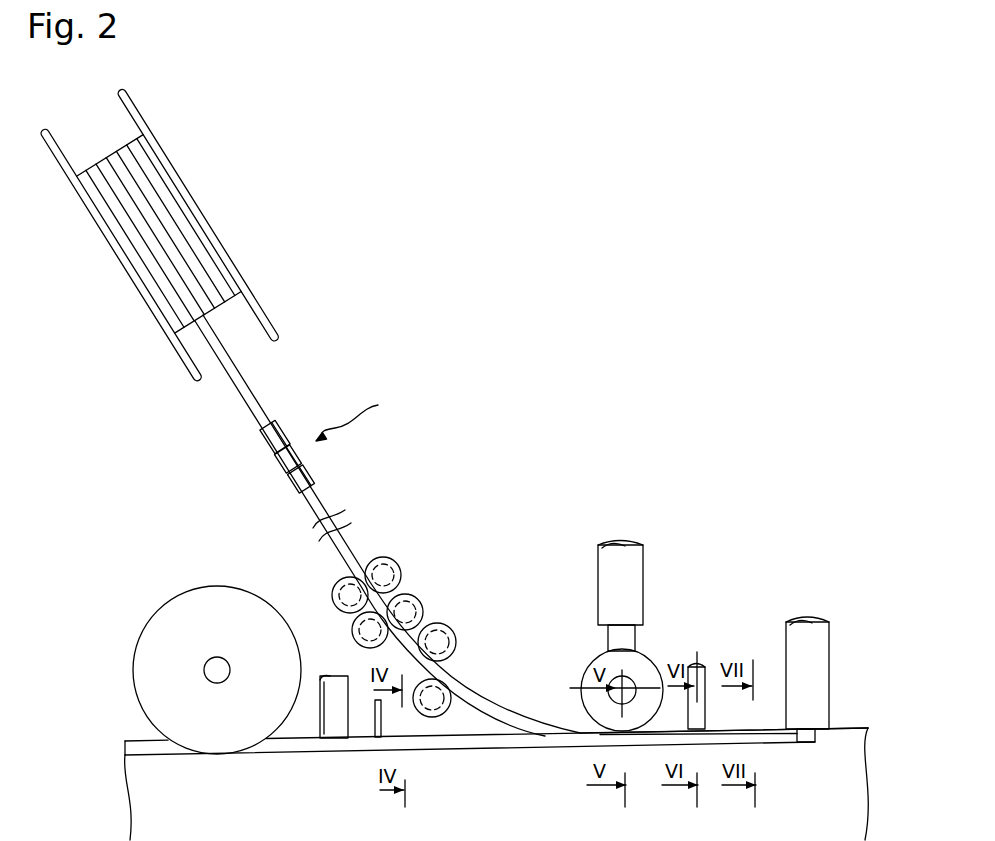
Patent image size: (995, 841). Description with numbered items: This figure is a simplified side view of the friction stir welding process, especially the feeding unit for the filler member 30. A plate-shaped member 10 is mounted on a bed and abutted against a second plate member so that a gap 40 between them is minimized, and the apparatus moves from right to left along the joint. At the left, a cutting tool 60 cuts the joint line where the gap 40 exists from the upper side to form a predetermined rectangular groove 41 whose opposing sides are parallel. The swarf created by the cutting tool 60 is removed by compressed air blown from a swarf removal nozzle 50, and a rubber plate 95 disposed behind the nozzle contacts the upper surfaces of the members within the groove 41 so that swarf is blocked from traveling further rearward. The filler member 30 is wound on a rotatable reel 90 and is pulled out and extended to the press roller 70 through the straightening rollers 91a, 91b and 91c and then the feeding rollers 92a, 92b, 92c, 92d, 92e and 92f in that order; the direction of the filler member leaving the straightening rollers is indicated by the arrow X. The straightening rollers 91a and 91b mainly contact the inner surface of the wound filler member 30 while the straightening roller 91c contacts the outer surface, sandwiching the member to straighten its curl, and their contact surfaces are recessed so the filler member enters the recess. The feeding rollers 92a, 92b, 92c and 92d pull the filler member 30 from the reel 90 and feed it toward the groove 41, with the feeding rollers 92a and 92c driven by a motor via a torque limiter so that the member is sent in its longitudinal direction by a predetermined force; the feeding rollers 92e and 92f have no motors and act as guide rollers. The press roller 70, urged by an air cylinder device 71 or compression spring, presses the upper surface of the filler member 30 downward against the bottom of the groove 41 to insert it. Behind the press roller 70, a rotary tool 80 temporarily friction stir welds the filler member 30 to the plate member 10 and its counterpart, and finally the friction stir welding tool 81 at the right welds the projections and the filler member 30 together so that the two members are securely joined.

The plate-shaped member 10 is at (665, 817).
The filler member 30 is at (250, 380).
The gap 40 is at (156, 755).
The groove 41 is at (510, 742).
The swarf removal nozzle 50 is at (320, 708).
The cutting tool 60 is at (181, 622).
The press roller 70 is at (650, 666).
The air cylinder device 71 is at (628, 548).
The rotary tool 80 is at (705, 666).
The friction stir welding tool 81 is at (829, 648).
The reel 90 is at (138, 117).
The straightening roller 91a is at (290, 436).
The straightening roller 91b is at (278, 462).
The straightening roller 91c is at (292, 480).
The feeding roller 92a is at (384, 558).
The feeding roller 92b is at (335, 582).
The feeding roller 92c is at (415, 596).
The feeding roller 92d is at (354, 624).
The feeding roller 92e is at (455, 633).
The feeding roller 92f is at (432, 717).
The rubber plate 95 is at (372, 722).
The feed direction X is at (356, 416).